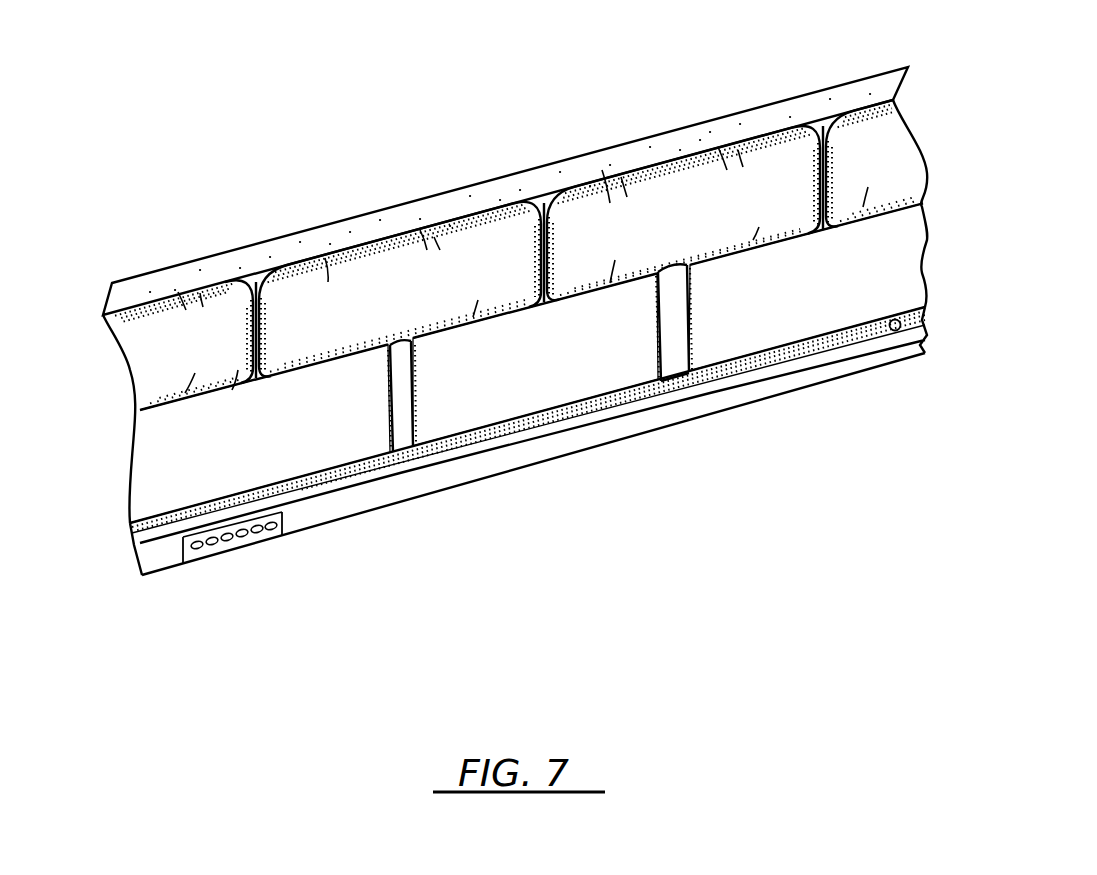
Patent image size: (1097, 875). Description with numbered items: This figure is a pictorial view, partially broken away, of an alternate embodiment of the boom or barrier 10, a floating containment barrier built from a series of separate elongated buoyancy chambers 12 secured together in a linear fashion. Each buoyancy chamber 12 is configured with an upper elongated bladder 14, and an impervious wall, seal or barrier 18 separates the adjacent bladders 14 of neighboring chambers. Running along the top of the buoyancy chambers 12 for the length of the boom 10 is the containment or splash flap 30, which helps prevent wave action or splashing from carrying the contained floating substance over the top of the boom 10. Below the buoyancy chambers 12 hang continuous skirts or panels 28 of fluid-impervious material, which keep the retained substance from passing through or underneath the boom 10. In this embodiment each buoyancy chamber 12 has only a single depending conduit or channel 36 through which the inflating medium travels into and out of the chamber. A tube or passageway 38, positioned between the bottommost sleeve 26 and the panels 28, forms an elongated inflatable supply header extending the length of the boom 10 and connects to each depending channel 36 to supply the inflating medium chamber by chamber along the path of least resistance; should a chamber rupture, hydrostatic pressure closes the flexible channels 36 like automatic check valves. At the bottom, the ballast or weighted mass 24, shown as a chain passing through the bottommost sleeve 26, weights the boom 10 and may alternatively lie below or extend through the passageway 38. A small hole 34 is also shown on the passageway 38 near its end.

The boom or barrier 10 is at (259, 224).
The buoyancy chamber 12 is at (406, 311).
The elongated bladder 14 is at (304, 374).
The impervious wall, seal or barrier 18 is at (256, 333).
The ballast or weighted mass 24 is at (223, 545).
The bottommost sleeve 26 is at (330, 517).
The skirts or panels 28 is at (228, 455).
The containment or splash flap 30 is at (775, 101).
The hole 34 is at (895, 331).
The single conduit or channel 36 is at (392, 421).
The tube or passageway 38 is at (258, 487).